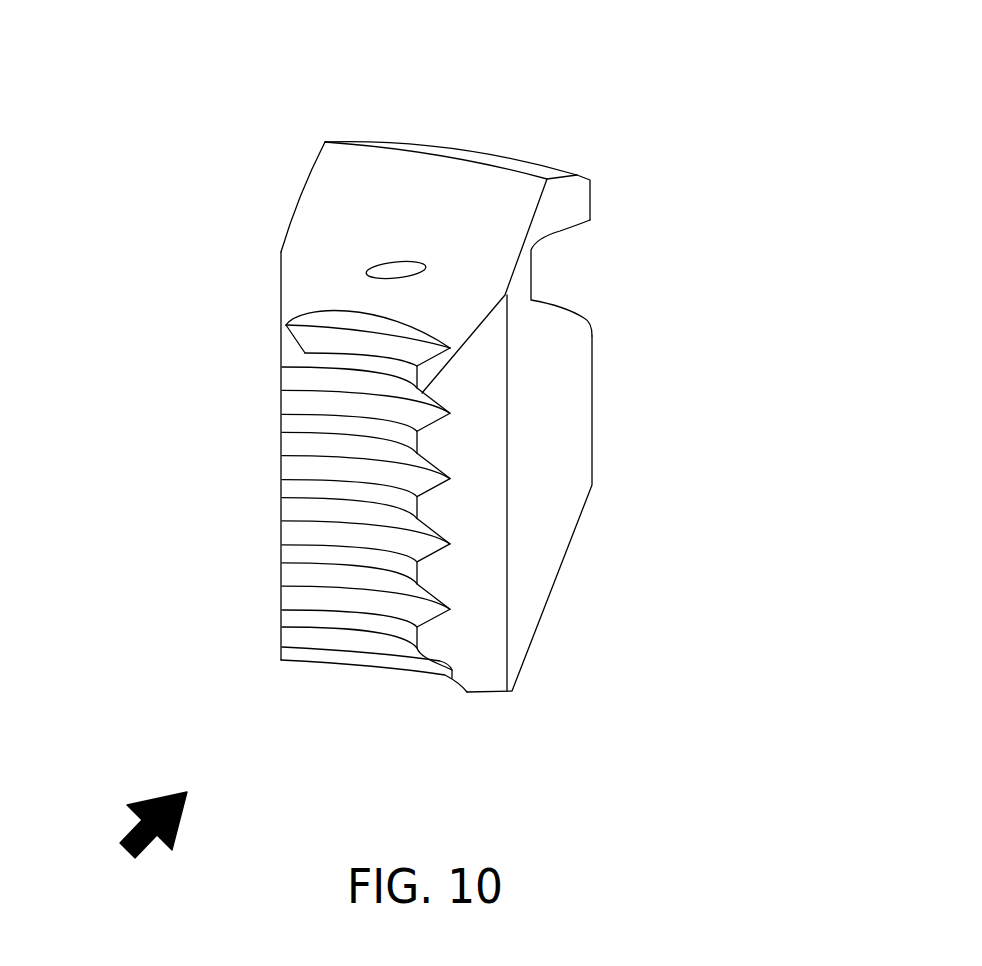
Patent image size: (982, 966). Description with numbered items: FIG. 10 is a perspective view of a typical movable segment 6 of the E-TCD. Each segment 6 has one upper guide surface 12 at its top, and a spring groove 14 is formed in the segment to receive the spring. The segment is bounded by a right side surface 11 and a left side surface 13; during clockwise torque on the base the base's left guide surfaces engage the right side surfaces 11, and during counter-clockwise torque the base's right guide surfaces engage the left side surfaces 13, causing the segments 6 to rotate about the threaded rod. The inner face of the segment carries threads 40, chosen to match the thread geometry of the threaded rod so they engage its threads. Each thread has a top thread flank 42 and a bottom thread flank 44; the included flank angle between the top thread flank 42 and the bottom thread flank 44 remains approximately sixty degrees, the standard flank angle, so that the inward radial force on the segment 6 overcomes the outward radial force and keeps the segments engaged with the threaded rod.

The upper guide surface 12 is at (413, 203).
The spring groove 14 is at (531, 272).
The left side surface 13 is at (555, 415).
The right side surface 11 is at (282, 575).
The threads of segment 40 is at (423, 447).
The top thread flank 42 is at (312, 443).
The bottom thread flank 44 is at (310, 402).
The segment 6 is at (135, 848).